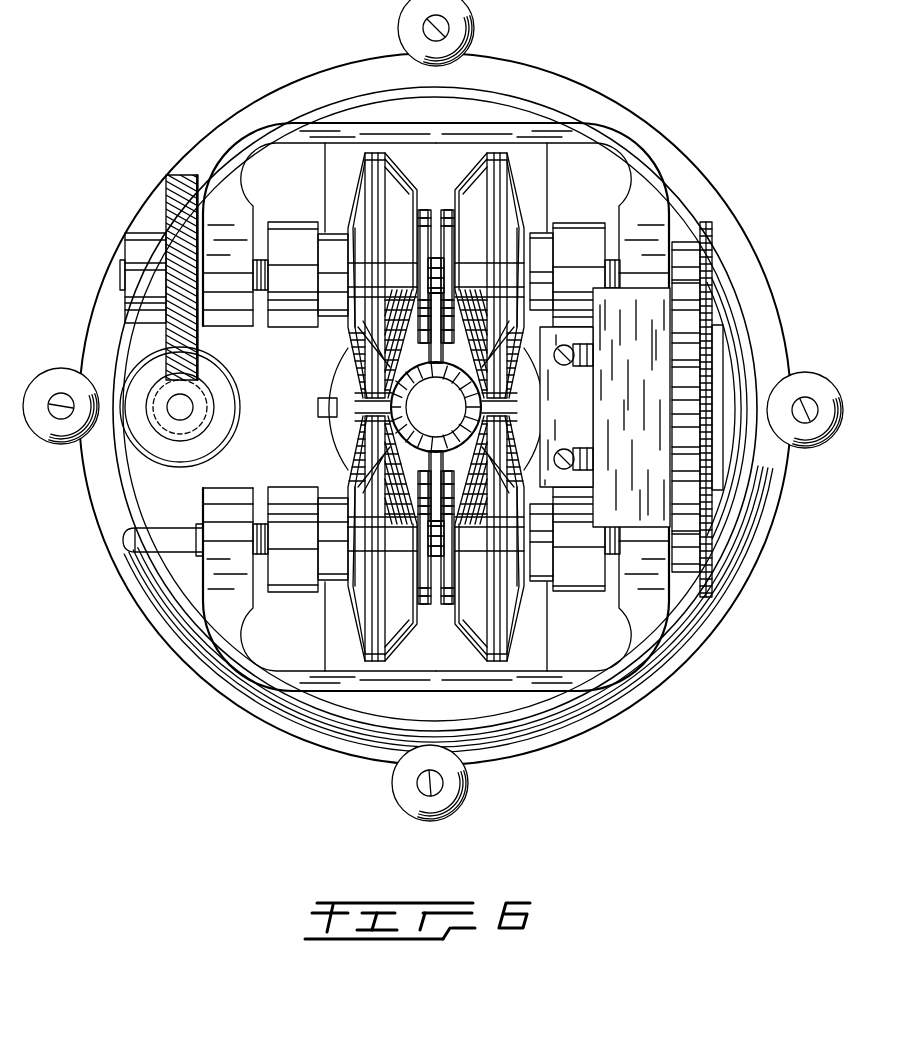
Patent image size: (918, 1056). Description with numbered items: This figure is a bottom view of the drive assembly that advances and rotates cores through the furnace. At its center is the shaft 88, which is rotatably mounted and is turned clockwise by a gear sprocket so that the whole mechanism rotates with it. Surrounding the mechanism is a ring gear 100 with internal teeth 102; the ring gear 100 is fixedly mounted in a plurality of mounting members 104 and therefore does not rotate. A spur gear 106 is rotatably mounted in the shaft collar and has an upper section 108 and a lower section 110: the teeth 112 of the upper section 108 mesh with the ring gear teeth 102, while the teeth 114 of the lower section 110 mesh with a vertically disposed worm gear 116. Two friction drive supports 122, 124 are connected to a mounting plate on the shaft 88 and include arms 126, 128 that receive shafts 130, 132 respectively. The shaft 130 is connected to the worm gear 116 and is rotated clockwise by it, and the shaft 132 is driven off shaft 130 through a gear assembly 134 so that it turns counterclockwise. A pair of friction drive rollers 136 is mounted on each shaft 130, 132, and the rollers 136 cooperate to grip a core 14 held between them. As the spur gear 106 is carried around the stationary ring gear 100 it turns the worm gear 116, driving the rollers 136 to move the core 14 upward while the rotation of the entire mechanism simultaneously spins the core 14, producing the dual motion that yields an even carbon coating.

The core 14 is at (400, 411).
The shaft 88 is at (340, 437).
The ring gear 100 is at (140, 218).
The internal teeth 102 is at (137, 510).
The mounting members 104 is at (472, 38).
The spur gear 106 is at (216, 398).
The upper section 108 is at (223, 430).
The lower section 110 is at (193, 387).
The teeth 112 is at (220, 407).
The teeth 114 is at (208, 404).
The worm gear 116 is at (185, 182).
The friction drive support 122 is at (335, 166).
The friction drive support 124 is at (320, 613).
The arm 126 is at (445, 126).
The arm 128 is at (463, 683).
The shaft 130 is at (258, 262).
The shaft 132 is at (262, 523).
The gear assembly 134 is at (733, 372).
The friction drive rollers 136 is at (462, 179).